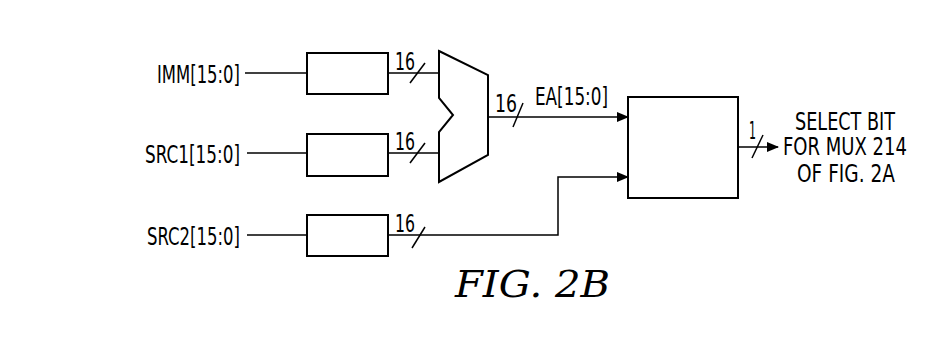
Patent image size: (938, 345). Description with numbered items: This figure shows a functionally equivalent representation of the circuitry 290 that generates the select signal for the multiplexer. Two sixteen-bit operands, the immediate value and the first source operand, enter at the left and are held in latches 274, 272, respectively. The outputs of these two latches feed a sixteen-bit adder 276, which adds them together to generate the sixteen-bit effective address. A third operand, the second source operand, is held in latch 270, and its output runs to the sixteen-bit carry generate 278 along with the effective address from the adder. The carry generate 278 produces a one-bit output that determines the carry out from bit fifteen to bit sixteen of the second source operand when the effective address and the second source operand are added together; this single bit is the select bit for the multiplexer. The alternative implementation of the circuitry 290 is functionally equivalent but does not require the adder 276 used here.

The latch 270 is at (307, 220).
The latch 272 is at (307, 139).
The latch 274 is at (307, 58).
The 16-bit adder 276 is at (464, 63).
The 16-bit carry generate 278 is at (684, 97).
The circuitry 290 is at (643, 243).